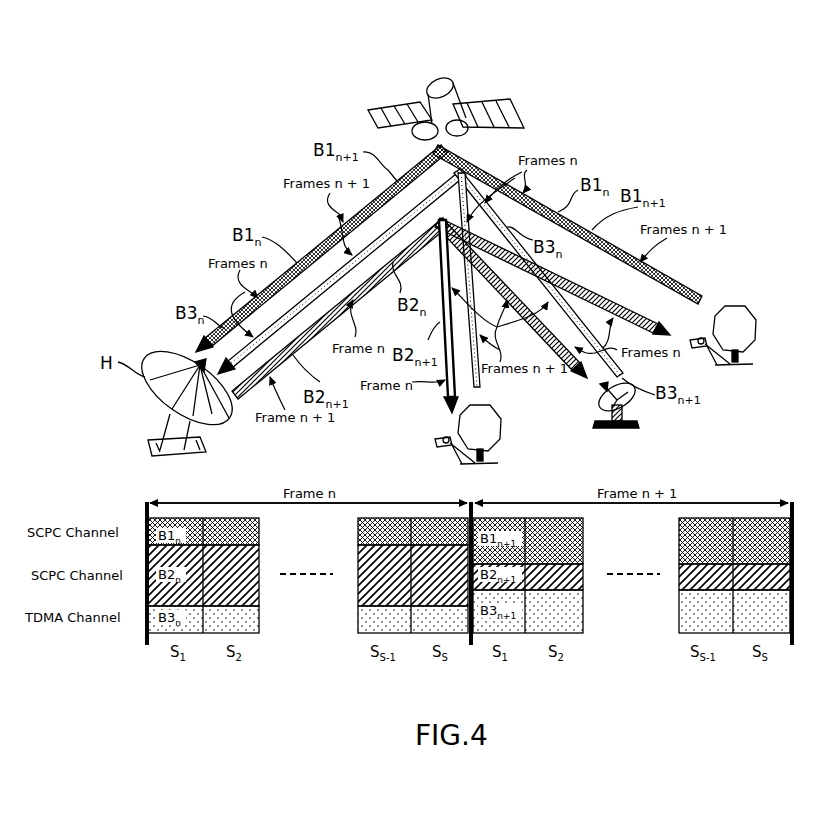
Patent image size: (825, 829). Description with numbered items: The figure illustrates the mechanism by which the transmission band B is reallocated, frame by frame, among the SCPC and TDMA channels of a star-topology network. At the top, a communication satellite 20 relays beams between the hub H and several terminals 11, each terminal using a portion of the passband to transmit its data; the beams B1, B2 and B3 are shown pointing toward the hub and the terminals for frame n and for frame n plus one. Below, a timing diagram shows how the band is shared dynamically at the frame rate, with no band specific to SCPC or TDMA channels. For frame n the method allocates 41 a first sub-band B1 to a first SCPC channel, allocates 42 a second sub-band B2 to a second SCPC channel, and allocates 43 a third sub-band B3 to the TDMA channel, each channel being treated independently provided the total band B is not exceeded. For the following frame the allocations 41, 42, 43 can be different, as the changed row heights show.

The communication satellite 20 is at (523, 114).
The terminals 11 is at (757, 323).
The allocation of the first sub-band to the first SCPC channel 41 is at (190, 516).
The allocation of the second sub-band to the second SCPC channel 42 is at (148, 600).
The allocation of the third sub-band to the TDMA channel 43 is at (190, 630).